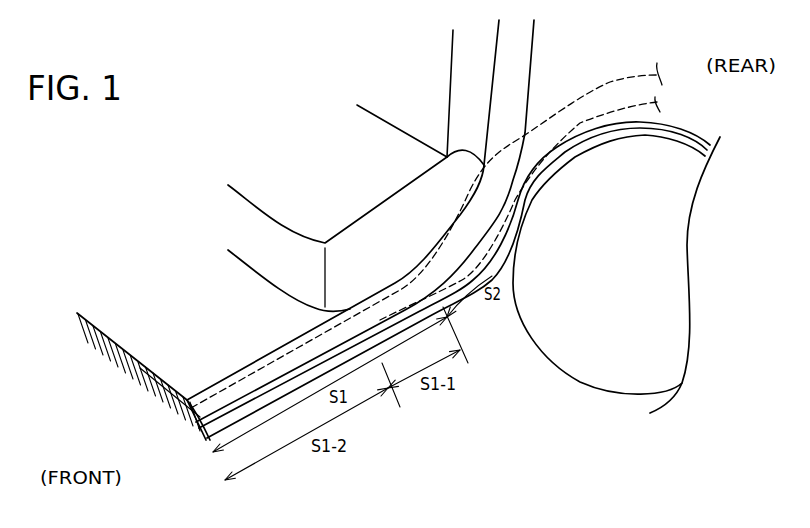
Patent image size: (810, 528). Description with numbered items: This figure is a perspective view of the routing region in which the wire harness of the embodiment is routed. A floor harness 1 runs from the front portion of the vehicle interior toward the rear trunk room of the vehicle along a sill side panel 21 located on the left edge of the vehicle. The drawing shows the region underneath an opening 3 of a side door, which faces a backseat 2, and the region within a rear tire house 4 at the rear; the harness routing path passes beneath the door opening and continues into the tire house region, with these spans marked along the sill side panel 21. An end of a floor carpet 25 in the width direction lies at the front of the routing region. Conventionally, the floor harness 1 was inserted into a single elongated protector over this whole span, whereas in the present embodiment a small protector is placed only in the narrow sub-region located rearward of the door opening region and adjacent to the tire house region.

The floor harness 1 is at (222, 400).
The backseat 2 is at (268, 265).
The opening 3 is at (188, 373).
The rear tire house 4 is at (665, 128).
The sill side panel 21 is at (235, 428).
The floor carpet 25 is at (165, 347).